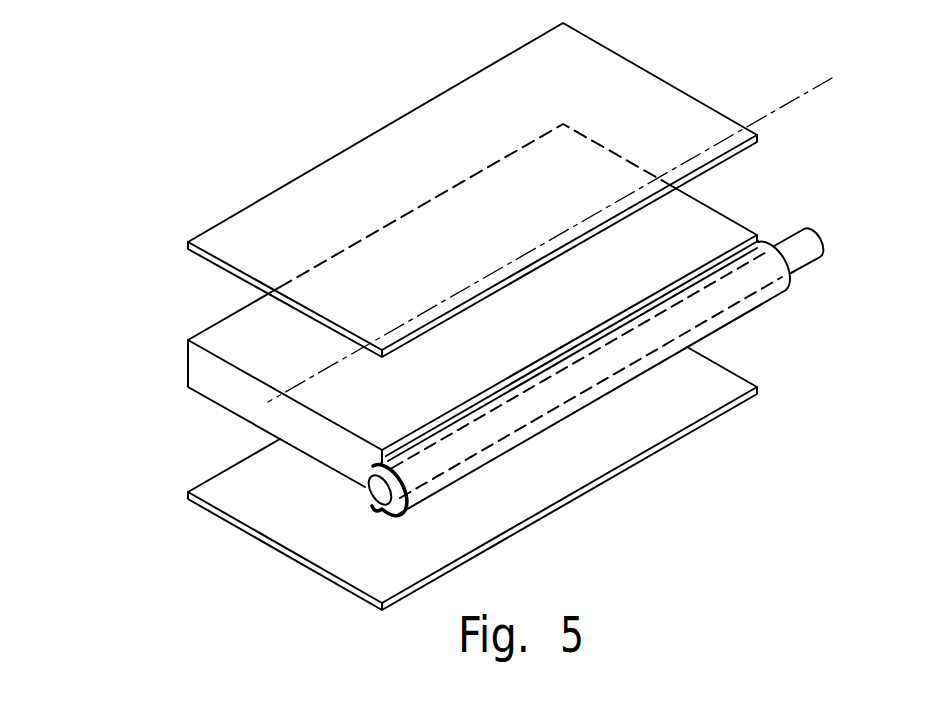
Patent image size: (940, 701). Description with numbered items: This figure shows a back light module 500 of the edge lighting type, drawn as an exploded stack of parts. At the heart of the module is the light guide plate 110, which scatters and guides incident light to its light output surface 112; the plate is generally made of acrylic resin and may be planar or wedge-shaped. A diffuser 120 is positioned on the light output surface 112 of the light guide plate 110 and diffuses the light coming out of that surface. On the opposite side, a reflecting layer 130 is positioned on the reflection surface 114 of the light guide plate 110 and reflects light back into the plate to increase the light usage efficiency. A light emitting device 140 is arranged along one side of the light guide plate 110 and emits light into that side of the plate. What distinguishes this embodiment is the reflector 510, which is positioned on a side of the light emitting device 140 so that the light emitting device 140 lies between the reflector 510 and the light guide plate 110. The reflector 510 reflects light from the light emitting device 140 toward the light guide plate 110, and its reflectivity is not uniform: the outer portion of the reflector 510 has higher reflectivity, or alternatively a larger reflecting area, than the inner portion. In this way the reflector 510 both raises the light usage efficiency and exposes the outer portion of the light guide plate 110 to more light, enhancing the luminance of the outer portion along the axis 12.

The back light module 500 is at (150, 62).
The axis 12 is at (813, 88).
The diffuser 120 is at (223, 235).
The light guide plate 110 is at (421, 305).
The light output surface 112 is at (228, 338).
The reflection surface 114 is at (280, 418).
The reflecting layer 130 is at (233, 500).
The light emitting device 140 is at (822, 258).
The reflector 510 is at (745, 316).